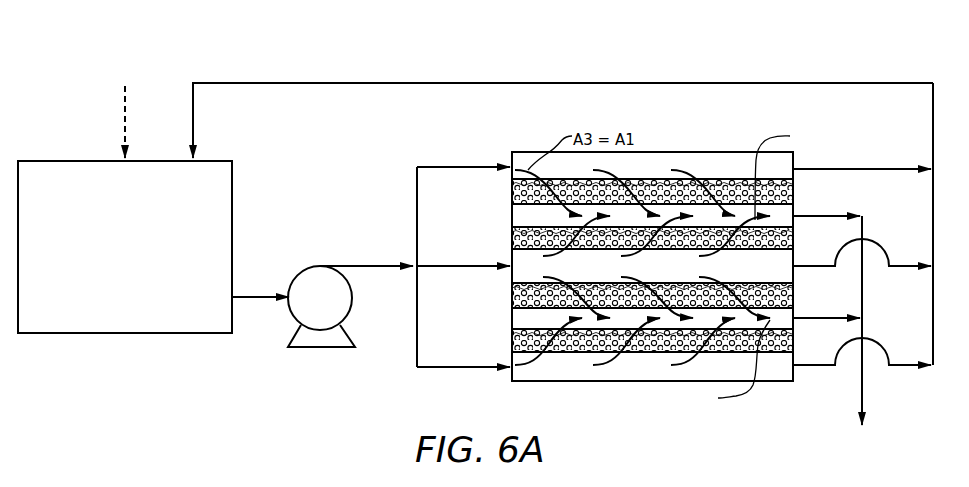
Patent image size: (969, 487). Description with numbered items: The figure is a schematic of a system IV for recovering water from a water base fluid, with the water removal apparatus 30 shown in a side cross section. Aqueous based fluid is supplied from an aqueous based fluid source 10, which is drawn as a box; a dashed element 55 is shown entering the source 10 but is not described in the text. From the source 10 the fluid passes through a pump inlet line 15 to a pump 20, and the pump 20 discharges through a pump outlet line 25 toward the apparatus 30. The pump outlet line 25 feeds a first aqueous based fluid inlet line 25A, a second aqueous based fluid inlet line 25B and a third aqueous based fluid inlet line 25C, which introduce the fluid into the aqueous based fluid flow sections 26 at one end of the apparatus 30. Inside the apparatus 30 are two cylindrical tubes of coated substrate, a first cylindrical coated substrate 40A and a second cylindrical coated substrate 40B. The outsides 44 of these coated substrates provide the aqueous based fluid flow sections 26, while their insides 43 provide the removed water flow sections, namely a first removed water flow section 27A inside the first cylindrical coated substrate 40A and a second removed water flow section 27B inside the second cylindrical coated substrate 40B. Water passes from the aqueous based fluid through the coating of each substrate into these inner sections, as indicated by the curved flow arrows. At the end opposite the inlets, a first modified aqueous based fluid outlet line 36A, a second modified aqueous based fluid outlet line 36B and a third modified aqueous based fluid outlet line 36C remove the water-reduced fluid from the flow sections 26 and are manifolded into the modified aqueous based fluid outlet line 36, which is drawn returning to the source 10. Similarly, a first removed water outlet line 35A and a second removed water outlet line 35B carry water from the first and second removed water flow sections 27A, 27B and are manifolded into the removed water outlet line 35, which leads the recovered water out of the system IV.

The aqueous based fluid source 10 is at (125, 247).
The pump inlet line 15 is at (254, 292).
The pump 20 is at (325, 349).
The pump outlet line 25 is at (368, 265).
The first aqueous based fluid inlet line 25A is at (442, 166).
The second aqueous based fluid inlet line 25B is at (436, 270).
The third aqueous based fluid inlet line 25C is at (438, 370).
The aqueous based fluid flow section 26 is at (621, 269).
The first removed water flow section 27A is at (788, 174).
The second removed water flow section 27B is at (727, 365).
The water removal apparatus 30 is at (507, 112).
The removed water outlet line 35 is at (861, 336).
The first removed water outlet line 35A is at (813, 220).
The second removed water outlet line 35B is at (813, 322).
The modified aqueous based fluid outlet line 36 is at (600, 83).
The first modified aqueous based fluid outlet line 36A is at (857, 167).
The second modified aqueous based fluid outlet line 36B is at (902, 270).
The third modified aqueous based fluid outlet line 36C is at (903, 369).
The first cylindrical coated substrate 40A is at (510, 180).
The second cylindrical coated substrate 40B is at (510, 284).
The insides of the coated substrates 43 is at (650, 267).
The outsides of the coated substrates 44 is at (642, 269).
The inlet 55 is at (122, 111).
The system IV is at (260, 16).